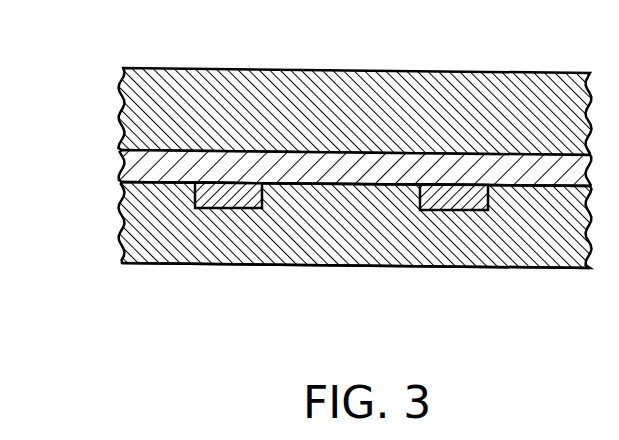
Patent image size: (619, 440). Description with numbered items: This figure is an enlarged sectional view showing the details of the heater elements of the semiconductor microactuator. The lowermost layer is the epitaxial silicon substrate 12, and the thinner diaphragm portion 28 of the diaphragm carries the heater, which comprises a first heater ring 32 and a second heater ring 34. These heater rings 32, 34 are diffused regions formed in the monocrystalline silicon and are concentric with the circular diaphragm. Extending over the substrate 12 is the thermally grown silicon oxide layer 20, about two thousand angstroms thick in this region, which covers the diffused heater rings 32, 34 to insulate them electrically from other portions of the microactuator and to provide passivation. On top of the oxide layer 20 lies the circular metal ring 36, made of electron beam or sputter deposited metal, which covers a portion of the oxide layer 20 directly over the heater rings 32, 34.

The epitaxial silicon substrate 12 is at (240, 268).
The thermally grown silicon oxide layer 20 is at (118, 168).
The thinner diaphragm portion 28 is at (345, 245).
The first heater ring 32 is at (220, 200).
The second heater ring 34 is at (462, 210).
The circular metal ring 36 is at (208, 68).